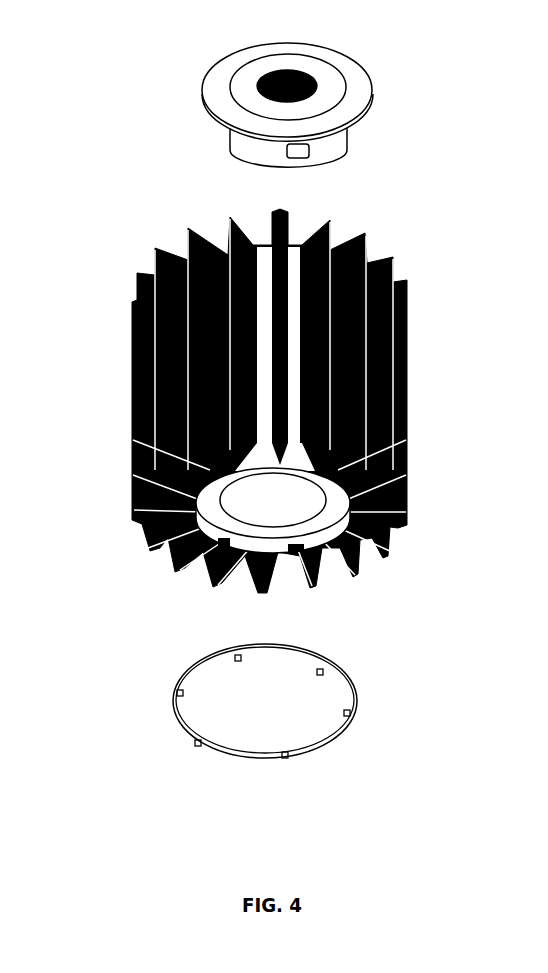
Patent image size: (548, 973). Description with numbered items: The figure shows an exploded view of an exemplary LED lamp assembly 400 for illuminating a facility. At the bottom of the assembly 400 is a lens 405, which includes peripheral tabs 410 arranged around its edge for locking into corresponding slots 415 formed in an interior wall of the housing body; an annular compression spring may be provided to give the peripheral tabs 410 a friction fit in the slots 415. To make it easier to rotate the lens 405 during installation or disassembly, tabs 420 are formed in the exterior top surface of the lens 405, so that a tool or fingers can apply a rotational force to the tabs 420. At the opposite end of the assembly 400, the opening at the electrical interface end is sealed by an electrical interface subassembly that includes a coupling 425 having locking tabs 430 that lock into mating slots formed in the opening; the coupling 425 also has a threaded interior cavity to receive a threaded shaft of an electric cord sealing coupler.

The LED lamp assembly 400 is at (41, 84).
The lens 405 is at (270, 719).
The peripheral tabs 410 is at (245, 701).
The slots 415 is at (310, 565).
The tabs 420 is at (322, 673).
The coupling 425 is at (355, 102).
The locking tabs 430 is at (300, 158).